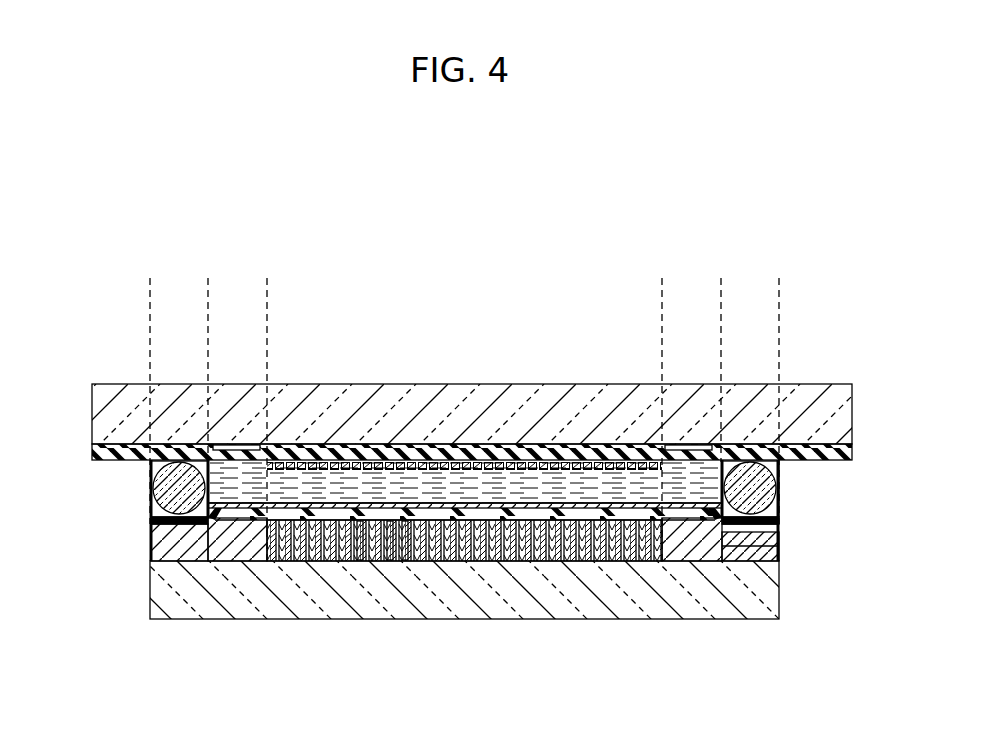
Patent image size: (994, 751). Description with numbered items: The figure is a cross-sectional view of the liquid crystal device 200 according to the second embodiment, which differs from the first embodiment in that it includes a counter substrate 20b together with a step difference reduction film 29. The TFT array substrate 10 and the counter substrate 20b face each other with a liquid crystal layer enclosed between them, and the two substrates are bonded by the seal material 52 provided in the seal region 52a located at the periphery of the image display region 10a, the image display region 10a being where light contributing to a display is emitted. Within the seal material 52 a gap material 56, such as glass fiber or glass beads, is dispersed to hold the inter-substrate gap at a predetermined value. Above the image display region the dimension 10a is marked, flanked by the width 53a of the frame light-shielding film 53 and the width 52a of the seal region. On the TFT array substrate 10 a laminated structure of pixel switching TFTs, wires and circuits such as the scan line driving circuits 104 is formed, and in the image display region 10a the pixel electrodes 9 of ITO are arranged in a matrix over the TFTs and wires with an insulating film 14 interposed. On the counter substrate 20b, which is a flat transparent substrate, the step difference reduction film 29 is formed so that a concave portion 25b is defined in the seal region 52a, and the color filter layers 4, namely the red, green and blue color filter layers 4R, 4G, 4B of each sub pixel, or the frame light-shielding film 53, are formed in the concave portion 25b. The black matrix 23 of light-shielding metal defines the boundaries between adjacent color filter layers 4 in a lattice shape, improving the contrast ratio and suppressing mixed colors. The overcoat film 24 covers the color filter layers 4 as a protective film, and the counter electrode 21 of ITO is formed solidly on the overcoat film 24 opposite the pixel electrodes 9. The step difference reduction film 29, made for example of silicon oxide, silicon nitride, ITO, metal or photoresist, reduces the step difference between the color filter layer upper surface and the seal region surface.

The liquid crystal device 200 is at (160, 196).
The seal region 52a is at (208, 292).
The peripheral region width 53a is at (267, 292).
The image display region 10a is at (662, 292).
The TFT array substrate 10 is at (818, 398).
The insulating film 14 is at (838, 461).
The scan line driving circuit 104 is at (225, 446).
The pixel electrodes 9 is at (312, 463).
The seal material 52 is at (152, 472).
The gap material 56 is at (166, 500).
The counter electrode 21 is at (152, 520).
The overcoat film 24 is at (153, 538).
The step difference reduction film 29 is at (766, 556).
The concave portion 25b is at (740, 546).
The counter substrate 20b is at (766, 600).
The frame light-shielding film 53 is at (236, 554).
The black matrix 23 is at (438, 561).
The color filter layers 4 is at (425, 682).
The red color filter layer 4R is at (361, 561).
The green color filter layer 4G is at (390, 561).
The blue color filter layer 4B is at (405, 561).